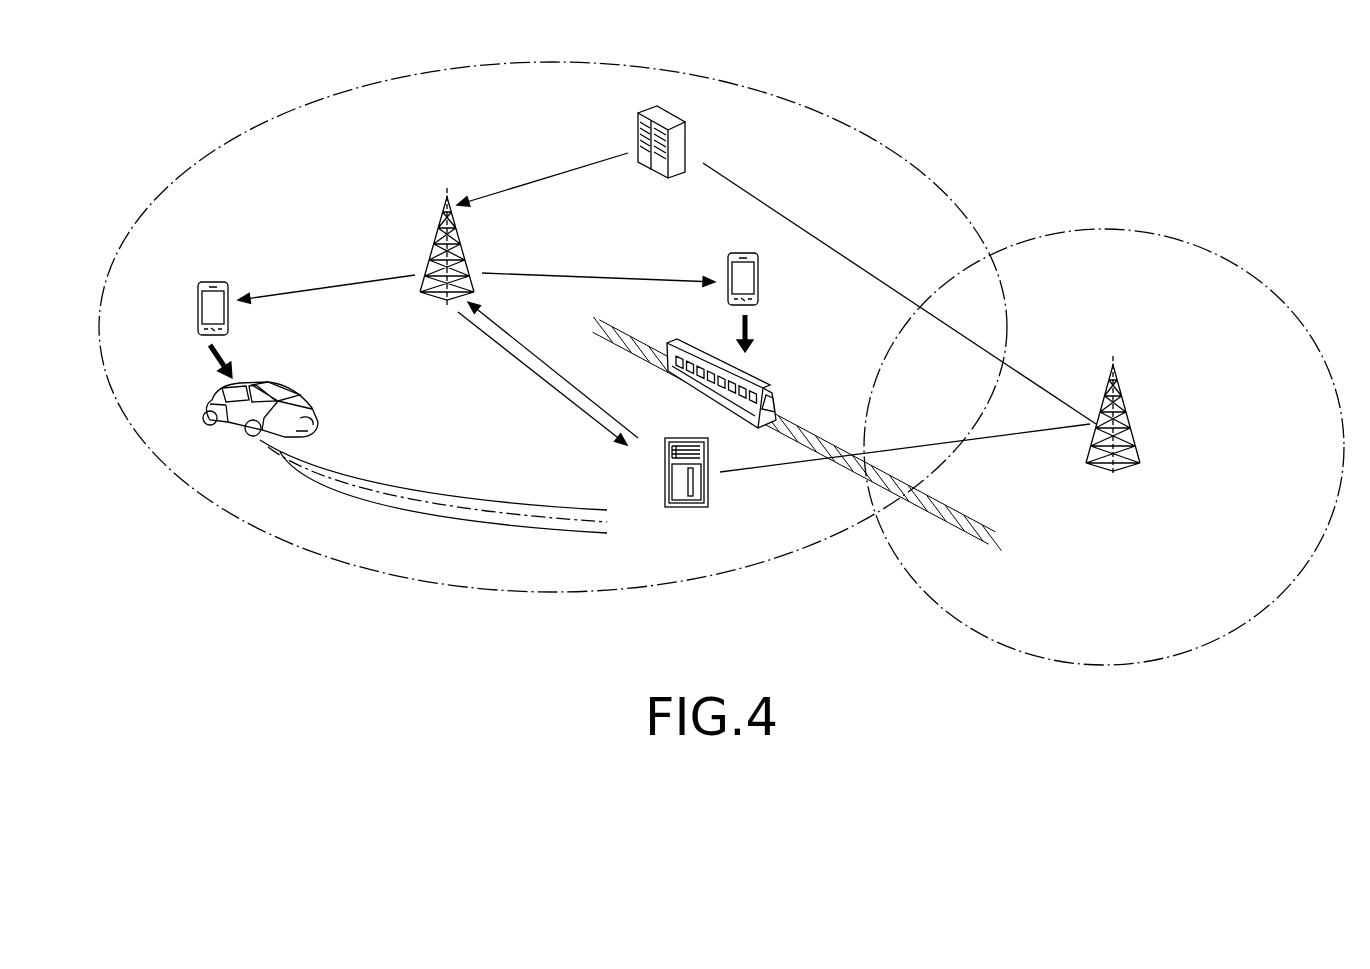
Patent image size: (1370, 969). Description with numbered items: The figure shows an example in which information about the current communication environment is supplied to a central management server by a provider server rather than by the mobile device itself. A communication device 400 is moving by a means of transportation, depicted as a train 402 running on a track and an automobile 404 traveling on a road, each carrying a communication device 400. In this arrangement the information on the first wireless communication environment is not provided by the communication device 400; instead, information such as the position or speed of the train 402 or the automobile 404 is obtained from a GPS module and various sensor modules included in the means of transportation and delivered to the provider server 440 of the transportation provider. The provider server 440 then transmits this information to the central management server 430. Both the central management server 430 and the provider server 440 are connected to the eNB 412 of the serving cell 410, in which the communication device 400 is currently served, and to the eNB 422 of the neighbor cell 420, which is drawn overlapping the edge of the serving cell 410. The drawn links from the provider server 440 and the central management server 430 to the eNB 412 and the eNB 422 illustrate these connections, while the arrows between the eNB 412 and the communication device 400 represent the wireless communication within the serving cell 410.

The communication device 400 is at (196, 308).
The train 402 is at (756, 382).
The automobile 404 is at (322, 405).
The serving cell 410 is at (553, 60).
The eNB of serving cell 412 is at (441, 217).
The neighbor cell 420 is at (1103, 228).
The eNB of neighbor cell 422 is at (1128, 419).
The central management server (CMS) 430 is at (663, 470).
The provider server 440 is at (690, 141).